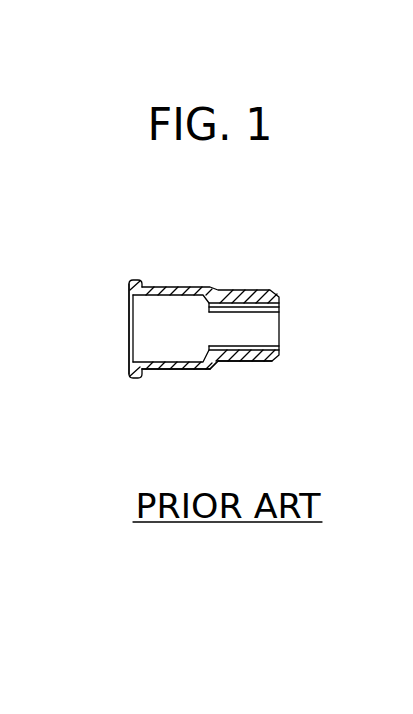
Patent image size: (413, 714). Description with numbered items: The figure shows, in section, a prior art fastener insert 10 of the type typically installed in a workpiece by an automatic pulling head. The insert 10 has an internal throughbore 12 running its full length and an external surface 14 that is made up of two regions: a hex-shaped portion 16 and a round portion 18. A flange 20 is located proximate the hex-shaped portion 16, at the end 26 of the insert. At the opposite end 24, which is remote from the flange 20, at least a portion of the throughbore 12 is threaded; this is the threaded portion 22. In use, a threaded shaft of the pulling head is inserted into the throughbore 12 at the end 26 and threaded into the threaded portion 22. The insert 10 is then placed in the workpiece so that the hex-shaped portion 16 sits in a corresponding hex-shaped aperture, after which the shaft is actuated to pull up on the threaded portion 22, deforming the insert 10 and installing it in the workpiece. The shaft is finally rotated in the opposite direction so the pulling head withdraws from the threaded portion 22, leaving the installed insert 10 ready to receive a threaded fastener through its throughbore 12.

The insert 10 is at (209, 321).
The internal throughbore 12 is at (296, 333).
The external surface 14 is at (240, 382).
The hex-shaped portion 16 is at (162, 370).
The round portion 18 is at (258, 362).
The flange 20 is at (137, 282).
The threaded portion 22 is at (247, 313).
The end 24 is at (280, 353).
The end 26 is at (128, 366).